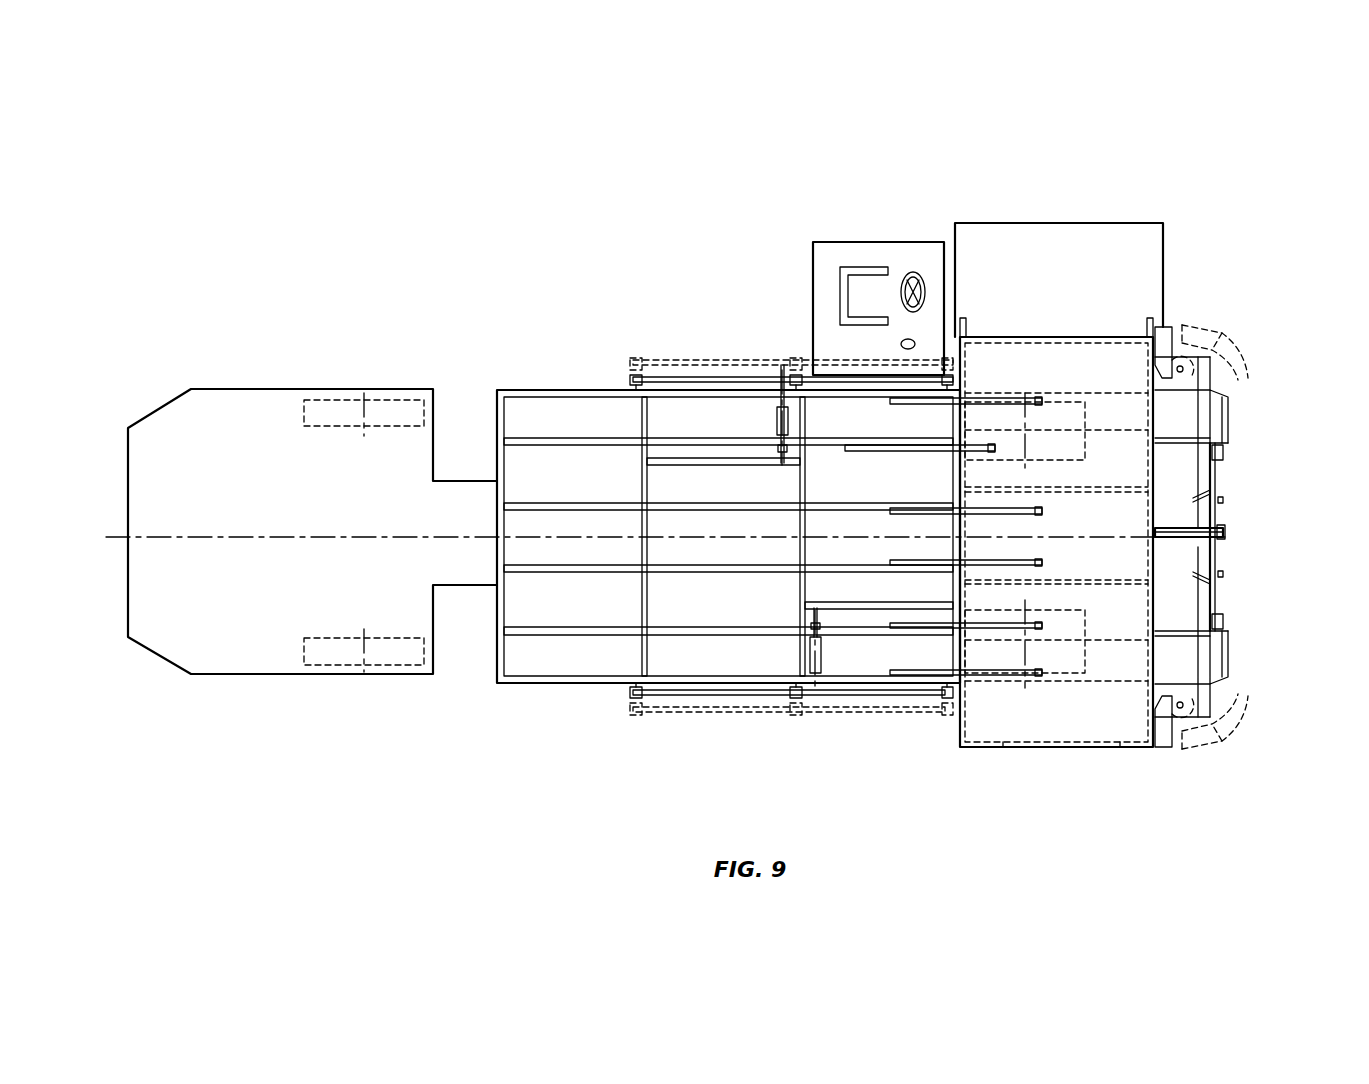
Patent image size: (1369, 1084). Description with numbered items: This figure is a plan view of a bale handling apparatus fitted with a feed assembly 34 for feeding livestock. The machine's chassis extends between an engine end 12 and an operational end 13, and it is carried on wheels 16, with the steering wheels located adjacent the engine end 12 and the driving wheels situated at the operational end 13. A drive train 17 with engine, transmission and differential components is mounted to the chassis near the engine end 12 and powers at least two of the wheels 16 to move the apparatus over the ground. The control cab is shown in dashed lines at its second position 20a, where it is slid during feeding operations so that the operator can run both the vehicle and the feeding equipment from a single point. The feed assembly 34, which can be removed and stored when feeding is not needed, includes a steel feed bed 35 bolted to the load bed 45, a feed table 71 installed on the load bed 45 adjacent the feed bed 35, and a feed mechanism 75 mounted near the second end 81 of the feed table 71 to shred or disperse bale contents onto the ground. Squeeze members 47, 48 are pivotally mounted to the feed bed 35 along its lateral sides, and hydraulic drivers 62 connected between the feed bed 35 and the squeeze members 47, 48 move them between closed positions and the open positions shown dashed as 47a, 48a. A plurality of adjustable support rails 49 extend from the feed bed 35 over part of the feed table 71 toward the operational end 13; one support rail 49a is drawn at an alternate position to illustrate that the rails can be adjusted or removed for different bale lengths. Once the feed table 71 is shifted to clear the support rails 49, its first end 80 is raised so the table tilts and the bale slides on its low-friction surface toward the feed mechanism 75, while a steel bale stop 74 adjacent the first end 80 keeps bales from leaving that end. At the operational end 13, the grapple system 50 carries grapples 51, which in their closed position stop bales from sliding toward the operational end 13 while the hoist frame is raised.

The engine end 12 is at (99, 452).
The operational end 13 is at (1297, 357).
The wheels 16 is at (343, 411).
The drive train 17 is at (172, 426).
The control cab second position 20a is at (815, 277).
The feed assembly 34 is at (768, 225).
The feed bed 35 is at (548, 390).
The load bed 45 is at (1228, 630).
The squeeze member 47 is at (690, 377).
The squeeze member open position 47a is at (760, 360).
The squeeze member 48 is at (758, 697).
The squeeze member open position 48a is at (843, 713).
The adjustable support rails 49 is at (977, 400).
The support rail at alternate position 49a is at (907, 452).
The grapple system 50 is at (1217, 487).
The grapples 51 is at (1220, 333).
The drivers 62 is at (780, 422).
The feed table 71 is at (1082, 518).
The bale stop 74 is at (1003, 743).
The feed mechanism 75 is at (1165, 240).
The first end 80 is at (1148, 762).
The second end 81 is at (1212, 318).